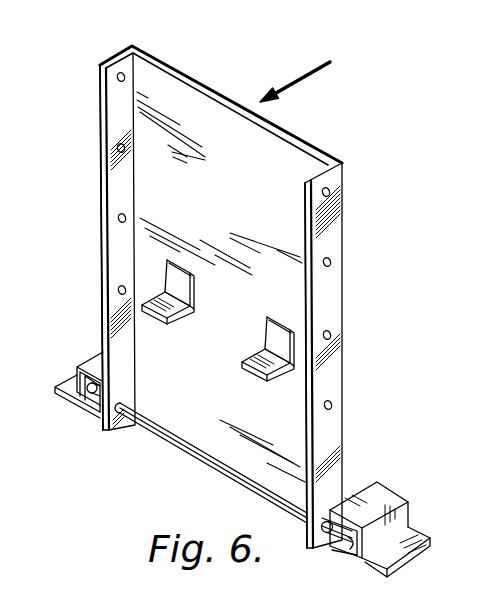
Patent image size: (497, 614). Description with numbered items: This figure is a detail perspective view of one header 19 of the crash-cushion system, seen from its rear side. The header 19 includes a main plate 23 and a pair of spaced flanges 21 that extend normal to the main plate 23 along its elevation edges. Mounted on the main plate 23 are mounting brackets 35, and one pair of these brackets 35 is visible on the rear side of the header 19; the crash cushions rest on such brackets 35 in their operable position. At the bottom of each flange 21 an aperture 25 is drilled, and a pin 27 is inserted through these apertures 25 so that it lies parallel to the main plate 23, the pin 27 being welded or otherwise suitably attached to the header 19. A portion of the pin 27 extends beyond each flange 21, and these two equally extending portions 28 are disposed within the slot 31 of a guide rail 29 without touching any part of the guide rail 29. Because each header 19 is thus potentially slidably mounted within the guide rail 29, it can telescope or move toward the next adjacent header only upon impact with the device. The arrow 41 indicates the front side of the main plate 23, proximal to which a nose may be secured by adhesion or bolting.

The header 19 is at (344, 232).
The flange 21 is at (133, 200).
The main plate 23 is at (290, 163).
The aperture 25 is at (122, 428).
The pin 27 is at (173, 441).
The extending portions of pin 28 is at (88, 398).
The guide rail 29 is at (92, 357).
The slot 31 is at (70, 382).
The mounting bracket 35 is at (150, 297).
The arrow 41 is at (312, 72).